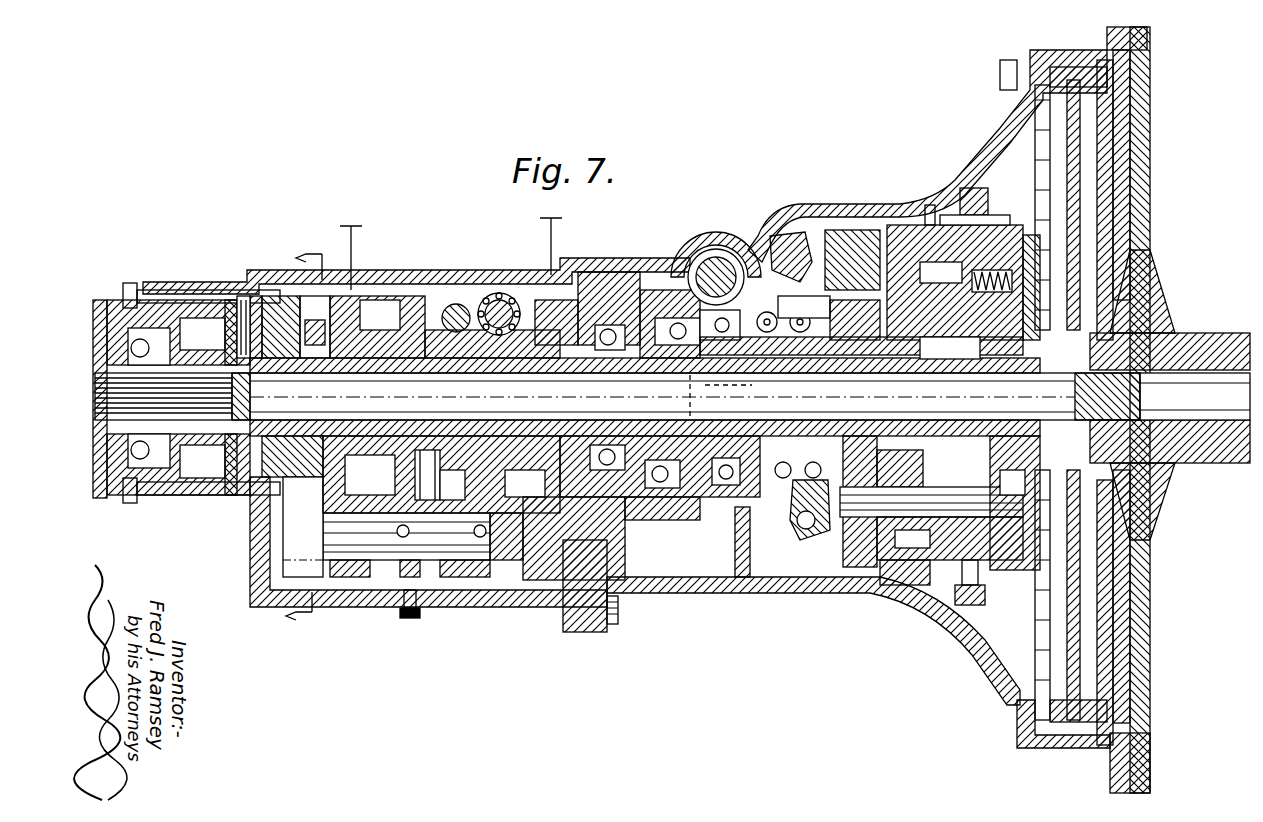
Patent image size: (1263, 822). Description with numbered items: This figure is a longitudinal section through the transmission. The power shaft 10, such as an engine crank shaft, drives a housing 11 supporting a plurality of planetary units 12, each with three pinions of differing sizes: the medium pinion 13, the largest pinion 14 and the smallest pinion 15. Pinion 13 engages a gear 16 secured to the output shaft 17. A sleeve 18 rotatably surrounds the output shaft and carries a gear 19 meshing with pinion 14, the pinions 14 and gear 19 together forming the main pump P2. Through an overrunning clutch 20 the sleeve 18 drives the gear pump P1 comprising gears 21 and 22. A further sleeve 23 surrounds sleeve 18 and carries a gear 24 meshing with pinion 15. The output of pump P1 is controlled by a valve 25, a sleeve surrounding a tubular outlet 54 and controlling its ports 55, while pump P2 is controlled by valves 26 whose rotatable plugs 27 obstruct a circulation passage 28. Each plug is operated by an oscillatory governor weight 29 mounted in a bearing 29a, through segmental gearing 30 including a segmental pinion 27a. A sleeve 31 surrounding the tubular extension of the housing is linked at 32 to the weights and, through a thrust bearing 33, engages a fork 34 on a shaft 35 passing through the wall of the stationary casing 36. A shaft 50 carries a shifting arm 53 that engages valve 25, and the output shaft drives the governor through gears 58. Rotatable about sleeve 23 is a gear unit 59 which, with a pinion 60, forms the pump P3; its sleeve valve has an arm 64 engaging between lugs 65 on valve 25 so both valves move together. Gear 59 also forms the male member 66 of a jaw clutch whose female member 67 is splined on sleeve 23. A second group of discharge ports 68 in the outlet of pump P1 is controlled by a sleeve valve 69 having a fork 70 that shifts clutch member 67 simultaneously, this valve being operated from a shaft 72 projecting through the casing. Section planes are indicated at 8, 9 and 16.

The section line 8 is at (950, 206).
The section line 9 is at (311, 440).
The power shaft 10 is at (1228, 345).
The housing 11 is at (1030, 272).
The planetary unit 12 is at (990, 185).
The pinion 13 is at (1015, 562).
The pinion 14 is at (368, 300).
The pinion 15 is at (890, 585).
The gear 16 is at (1032, 270).
The output shaft 17 is at (617, 396).
The sleeve 18 is at (772, 370).
The gear 19 is at (938, 358).
The overrunning clutch 20 is at (352, 330).
The gear 21 is at (300, 320).
The gear 22 is at (290, 558).
The sleeve 23 is at (662, 350).
The gear 24 is at (848, 500).
The valve 25 is at (410, 577).
The valve 26 is at (960, 235).
The rotatable plug 27 is at (888, 225).
The segmental pinion 27a is at (850, 330).
The circulation passage 28 is at (941, 272).
The governor weight 29 is at (782, 235).
The bearing 29a is at (807, 531).
The segmental gearing 30 is at (838, 232).
The sleeve 31 is at (655, 345).
The link 32 is at (789, 395).
The thrust bearing 33 is at (716, 495).
The fork 34 is at (724, 397).
The shaft 35 is at (715, 262).
The casing 36 is at (648, 258).
The shaft 50 is at (499, 300).
The shifting arm 53 is at (525, 483).
The tubular outlet 54 is at (378, 562).
The ports 55 is at (403, 540).
The gear 58 is at (185, 345).
The gear unit 59 is at (555, 330).
The pinion 60 is at (570, 560).
The projecting arm 64 is at (495, 560).
The lugs 65 is at (442, 483).
The male clutch member 66 is at (552, 315).
The female clutch member 67 is at (486, 300).
The discharge ports 68 is at (480, 540).
The sleeve valve 69 is at (355, 580).
The fork 70 is at (466, 490).
The shaft 72 is at (456, 304).
The gear pump P1 is at (348, 246).
The main pump P2 is at (960, 507).
The gear pump P3 is at (550, 235).